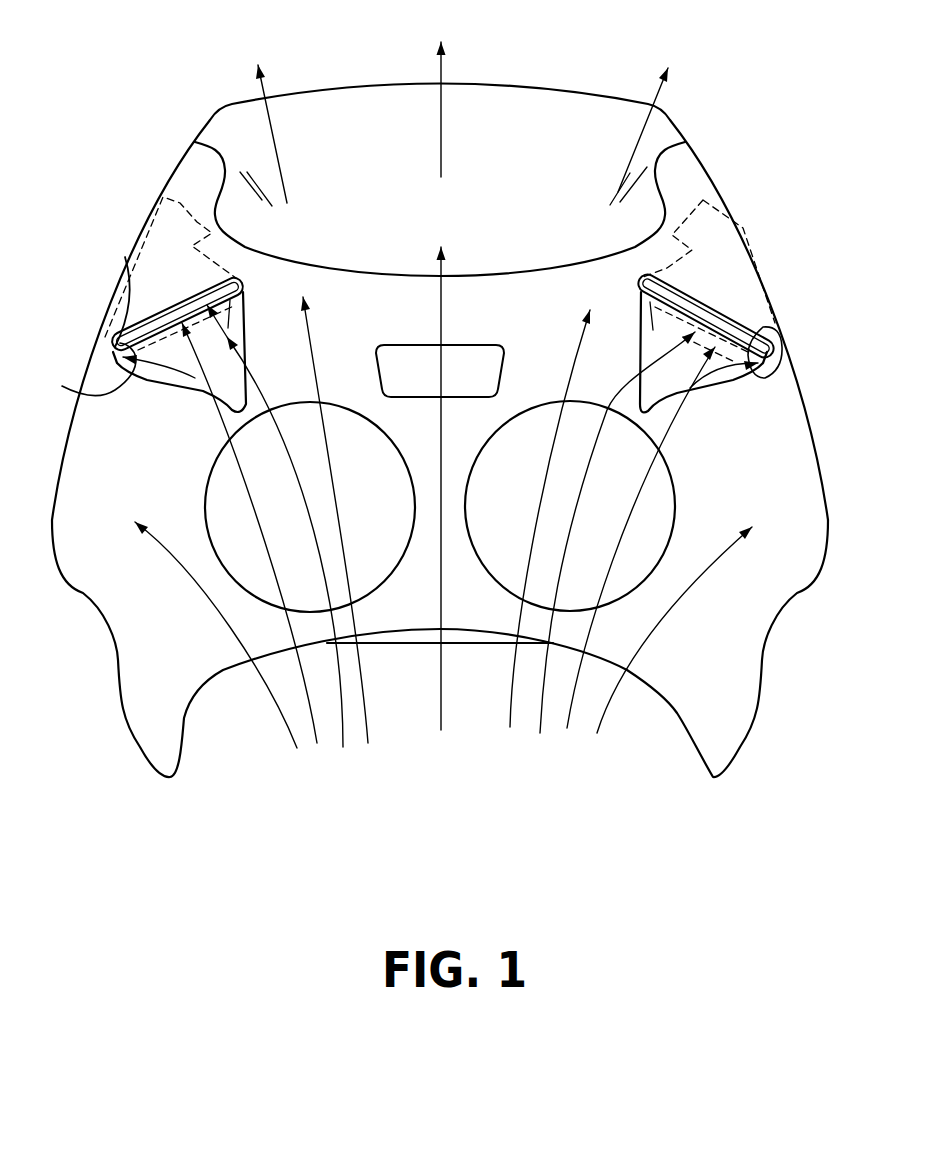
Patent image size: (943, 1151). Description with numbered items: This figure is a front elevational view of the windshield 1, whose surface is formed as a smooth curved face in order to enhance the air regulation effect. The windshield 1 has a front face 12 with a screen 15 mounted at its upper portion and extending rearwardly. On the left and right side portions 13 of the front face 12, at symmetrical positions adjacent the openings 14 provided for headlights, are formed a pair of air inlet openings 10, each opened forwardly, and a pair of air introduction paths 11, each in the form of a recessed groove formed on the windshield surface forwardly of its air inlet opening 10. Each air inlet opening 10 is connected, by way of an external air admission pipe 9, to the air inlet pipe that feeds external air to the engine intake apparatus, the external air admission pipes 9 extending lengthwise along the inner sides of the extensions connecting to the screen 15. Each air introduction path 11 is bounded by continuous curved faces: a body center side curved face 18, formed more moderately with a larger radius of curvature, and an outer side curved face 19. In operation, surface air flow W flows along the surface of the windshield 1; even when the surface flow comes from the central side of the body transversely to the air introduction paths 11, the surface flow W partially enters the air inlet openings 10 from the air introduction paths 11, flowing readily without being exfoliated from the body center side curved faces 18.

The windshield 1 is at (561, 72).
The external air admission pipe 9 is at (145, 230).
The air inlet opening 10 is at (83, 373).
The air introduction path 11 is at (175, 383).
The front face 12 is at (423, 600).
The side portion 13 is at (92, 535).
The opening 14 is at (386, 508).
The screen 15 is at (381, 108).
The body center side curved face 18 is at (213, 288).
The outer side curved face 19 is at (127, 258).
The surface air flow W is at (440, 540).